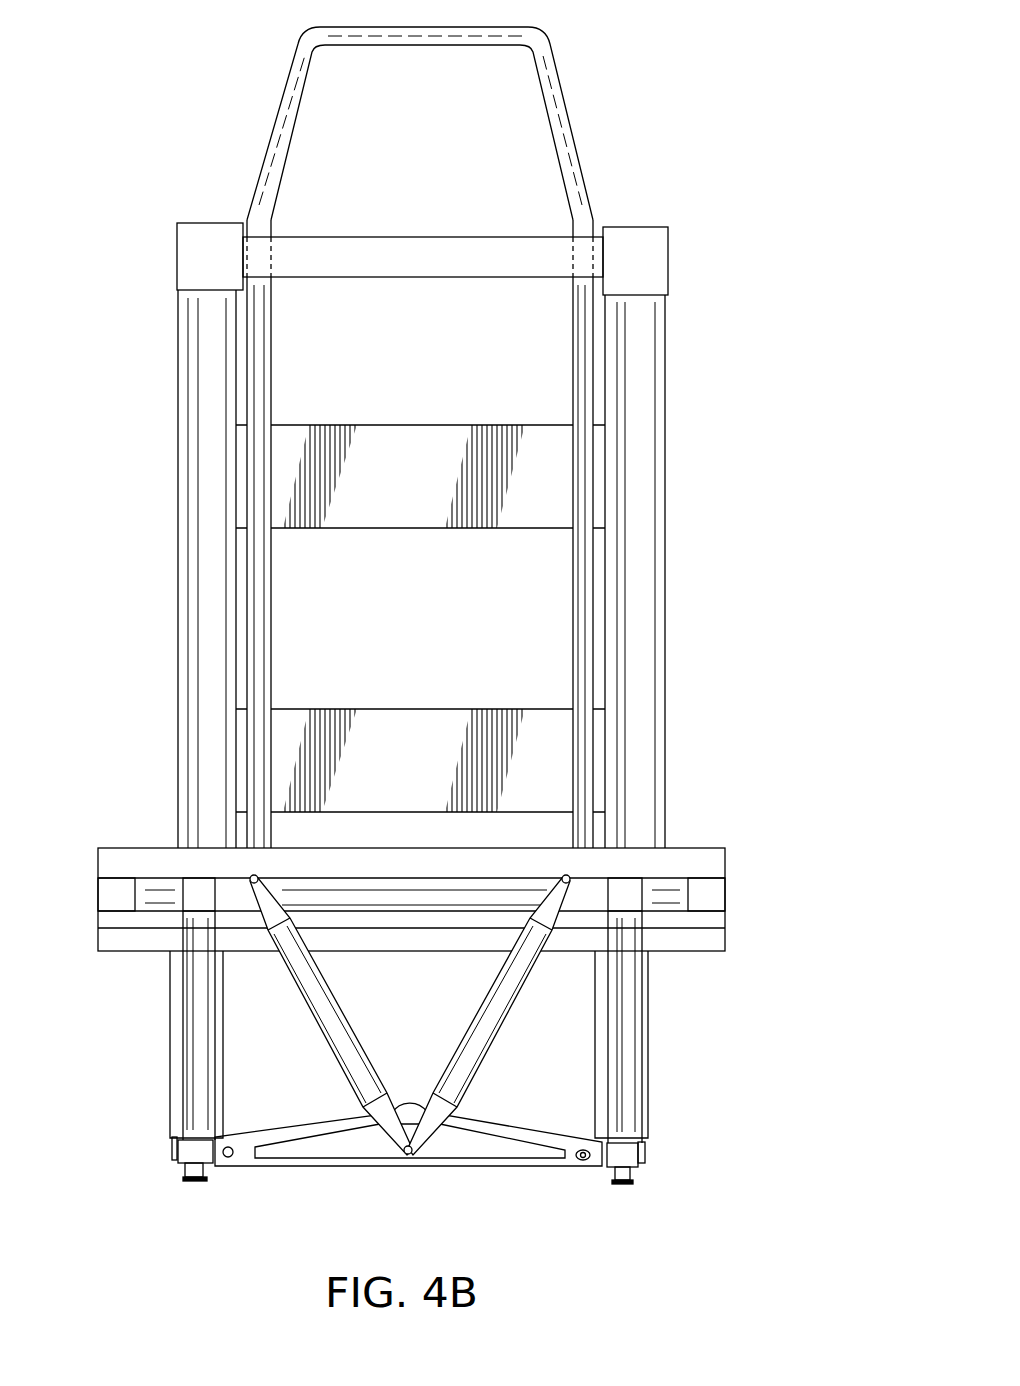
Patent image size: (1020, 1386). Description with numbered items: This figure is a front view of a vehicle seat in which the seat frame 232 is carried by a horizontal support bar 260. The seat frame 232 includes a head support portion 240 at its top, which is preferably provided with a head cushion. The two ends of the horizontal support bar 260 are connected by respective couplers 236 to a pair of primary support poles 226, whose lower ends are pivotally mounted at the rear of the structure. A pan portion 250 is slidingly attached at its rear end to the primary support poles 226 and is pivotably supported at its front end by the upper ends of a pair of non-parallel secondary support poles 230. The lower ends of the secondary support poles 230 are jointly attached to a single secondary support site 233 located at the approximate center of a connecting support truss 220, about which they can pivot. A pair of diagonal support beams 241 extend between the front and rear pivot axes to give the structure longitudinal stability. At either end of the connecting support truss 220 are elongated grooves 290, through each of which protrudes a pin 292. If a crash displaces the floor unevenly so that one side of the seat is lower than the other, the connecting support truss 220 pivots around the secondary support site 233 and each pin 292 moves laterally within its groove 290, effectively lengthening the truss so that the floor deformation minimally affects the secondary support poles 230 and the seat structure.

The head support portion 240 is at (606, 77).
The seat frame 232 is at (275, 168).
The horizontal support bar 260 is at (390, 260).
The couplers 236 is at (192, 260).
The primary support poles 226 is at (193, 376).
The pan portion 250 is at (123, 867).
The diagonal support beams 241 is at (195, 1048).
The elongated grooves 290 is at (597, 1167).
The secondary support poles 230 is at (355, 1068).
The connecting support truss 220 is at (352, 1165).
The secondary support site 233 is at (410, 1158).
The pin 292 is at (582, 1168).